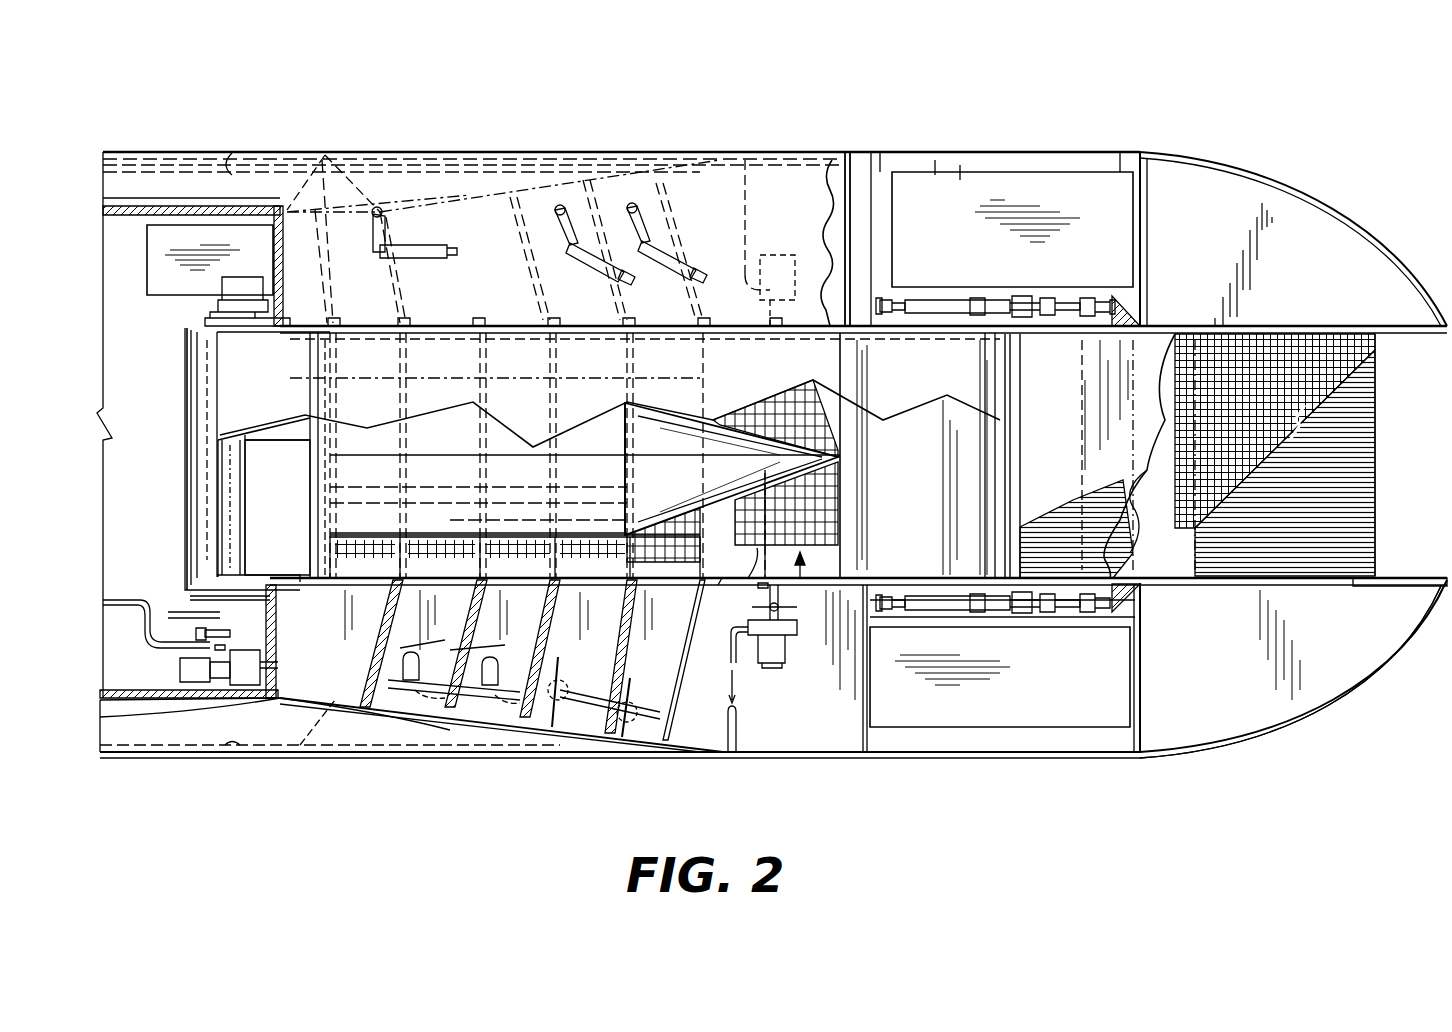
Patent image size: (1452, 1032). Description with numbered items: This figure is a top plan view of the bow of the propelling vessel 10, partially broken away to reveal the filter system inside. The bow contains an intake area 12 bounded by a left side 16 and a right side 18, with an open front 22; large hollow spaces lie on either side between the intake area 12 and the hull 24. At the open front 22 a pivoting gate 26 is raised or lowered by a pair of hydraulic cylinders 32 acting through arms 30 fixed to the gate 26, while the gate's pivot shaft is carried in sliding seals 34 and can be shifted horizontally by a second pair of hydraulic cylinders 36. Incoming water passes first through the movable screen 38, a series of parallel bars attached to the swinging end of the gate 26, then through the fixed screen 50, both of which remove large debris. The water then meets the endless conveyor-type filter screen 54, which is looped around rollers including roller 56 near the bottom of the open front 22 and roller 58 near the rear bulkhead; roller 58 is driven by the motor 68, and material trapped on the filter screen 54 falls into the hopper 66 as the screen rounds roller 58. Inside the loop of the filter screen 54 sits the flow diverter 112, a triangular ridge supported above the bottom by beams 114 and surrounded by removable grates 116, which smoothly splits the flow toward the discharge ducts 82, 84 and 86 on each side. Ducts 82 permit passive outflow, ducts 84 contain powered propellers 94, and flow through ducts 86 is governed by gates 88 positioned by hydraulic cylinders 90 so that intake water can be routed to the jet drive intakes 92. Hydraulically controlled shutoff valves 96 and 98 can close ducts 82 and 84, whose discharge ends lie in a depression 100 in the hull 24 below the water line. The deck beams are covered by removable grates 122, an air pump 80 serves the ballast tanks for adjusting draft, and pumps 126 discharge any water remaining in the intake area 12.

The propelling vessel 10 is at (1022, 125).
The intake area 12 is at (800, 580).
The left side 16 is at (995, 333).
The right side 18 is at (720, 572).
The open front 22 is at (1112, 376).
The hull 24 is at (1053, 752).
The pivoting gate 26 is at (1128, 486).
The arms 30 is at (1000, 300).
The hydraulic cylinders 32 is at (937, 300).
The sliding seals 34 is at (1045, 302).
The second pair of hydraulic cylinders 36 is at (1090, 300).
The movable screen 38 is at (1375, 510).
The fixed screen 50 is at (1148, 568).
The filter screen 54 is at (497, 360).
The roller 56 is at (1015, 460).
The roller 58 is at (228, 492).
The hopper 66 is at (187, 390).
The motor 68 is at (232, 296).
The air pump 80 is at (190, 235).
The ducts 82 is at (620, 190).
The ducts 84 is at (482, 175).
The ducts 86 is at (385, 288).
The gates 88 is at (325, 155).
The hydraulic cylinders 90 is at (410, 245).
The jet drive intakes 92 is at (240, 170).
The powered propellers 94 is at (375, 735).
The shutoff valves 96 is at (565, 690).
The shutoff valves 98 is at (440, 605).
The depression 100 is at (543, 160).
The flow diverter 112 is at (740, 473).
The beams 114 is at (757, 548).
The removable grates 116 is at (820, 405).
The removable grates 122 is at (1278, 345).
The pumps 126 is at (790, 270).